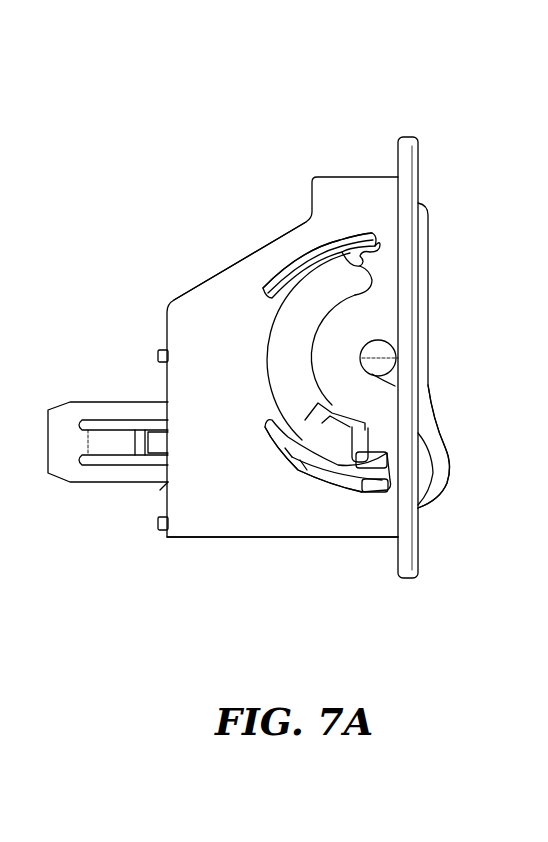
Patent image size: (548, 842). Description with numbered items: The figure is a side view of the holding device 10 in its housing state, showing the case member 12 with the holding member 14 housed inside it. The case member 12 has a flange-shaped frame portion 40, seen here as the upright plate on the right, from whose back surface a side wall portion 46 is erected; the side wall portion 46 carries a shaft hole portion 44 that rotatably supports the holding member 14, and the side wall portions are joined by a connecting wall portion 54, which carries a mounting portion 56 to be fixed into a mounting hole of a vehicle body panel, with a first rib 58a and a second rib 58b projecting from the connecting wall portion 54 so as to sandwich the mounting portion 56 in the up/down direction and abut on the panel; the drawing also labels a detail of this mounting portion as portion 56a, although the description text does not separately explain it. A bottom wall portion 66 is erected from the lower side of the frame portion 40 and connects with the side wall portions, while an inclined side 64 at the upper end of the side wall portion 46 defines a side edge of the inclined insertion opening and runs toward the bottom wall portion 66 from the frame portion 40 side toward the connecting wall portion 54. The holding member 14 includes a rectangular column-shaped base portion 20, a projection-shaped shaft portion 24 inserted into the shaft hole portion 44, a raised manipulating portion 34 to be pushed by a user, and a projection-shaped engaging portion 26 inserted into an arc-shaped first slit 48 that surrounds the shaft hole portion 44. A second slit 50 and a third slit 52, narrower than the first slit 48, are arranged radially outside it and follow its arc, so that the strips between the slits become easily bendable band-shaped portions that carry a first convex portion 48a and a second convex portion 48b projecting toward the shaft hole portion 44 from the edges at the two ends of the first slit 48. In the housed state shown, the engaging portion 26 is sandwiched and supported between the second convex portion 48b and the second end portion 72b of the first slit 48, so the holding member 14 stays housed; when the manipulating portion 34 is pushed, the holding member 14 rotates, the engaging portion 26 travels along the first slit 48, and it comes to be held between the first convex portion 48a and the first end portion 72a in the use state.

The holding device 10 is at (258, 572).
The case member 12 is at (365, 177).
The holding member 14 is at (431, 315).
The base portion 20 is at (430, 227).
The shaft portion 24 is at (383, 362).
The engaging portion 26 is at (360, 438).
The manipulating portion 34 is at (450, 458).
The frame portion 40 is at (418, 160).
The shaft hole portion 44 is at (395, 386).
The side wall portion 46 is at (220, 492).
The first slit 48 is at (262, 352).
The first convex portion 48a is at (335, 240).
The second convex portion 48b is at (343, 460).
The second slit 50 is at (288, 260).
The third slit 52 is at (313, 480).
The connecting wall portion 54 is at (166, 493).
The mounting portion 56 is at (70, 402).
The clip rib 56a is at (130, 440).
The first rib 58a is at (160, 350).
The second rib 58b is at (157, 522).
The inclined side 64 is at (245, 253).
The bottom wall portion 66 is at (193, 537).
The first end portion 72a is at (367, 275).
The second end portion 72b is at (365, 445).